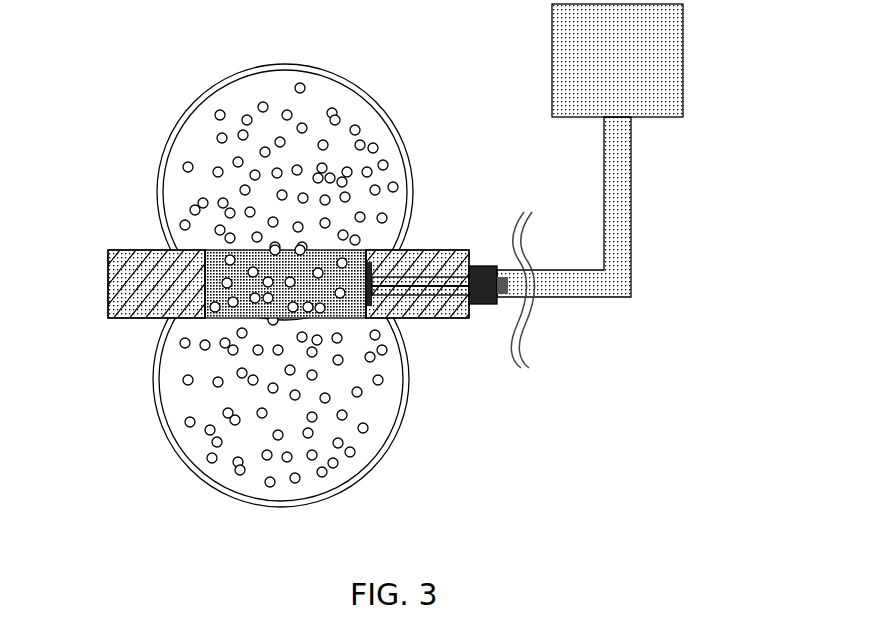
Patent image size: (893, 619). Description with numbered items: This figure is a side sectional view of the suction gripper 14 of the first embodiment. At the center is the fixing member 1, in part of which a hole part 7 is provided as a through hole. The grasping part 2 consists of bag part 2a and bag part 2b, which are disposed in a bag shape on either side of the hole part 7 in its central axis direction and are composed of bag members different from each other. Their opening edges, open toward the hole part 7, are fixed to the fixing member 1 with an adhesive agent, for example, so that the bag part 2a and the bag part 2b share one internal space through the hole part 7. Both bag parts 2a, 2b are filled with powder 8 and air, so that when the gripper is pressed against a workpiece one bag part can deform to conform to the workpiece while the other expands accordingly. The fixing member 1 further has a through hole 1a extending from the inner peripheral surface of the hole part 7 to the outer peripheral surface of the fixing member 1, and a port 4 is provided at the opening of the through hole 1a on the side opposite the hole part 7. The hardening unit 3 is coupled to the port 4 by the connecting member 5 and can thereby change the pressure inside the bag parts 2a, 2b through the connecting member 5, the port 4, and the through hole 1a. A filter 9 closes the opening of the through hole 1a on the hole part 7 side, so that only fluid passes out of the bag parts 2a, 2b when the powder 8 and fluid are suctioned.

The suction gripper 14 is at (108, 82).
The grasping part 2 is at (114, 377).
The bag part 2a is at (412, 157).
The bag part 2b is at (403, 407).
The filter 9 is at (360, 240).
The powder 8 is at (358, 450).
The hole part 7 is at (303, 288).
The fixing member 1 is at (450, 320).
The through hole 1a is at (442, 275).
The port 4 is at (477, 266).
The connecting member 5 is at (631, 218).
The hardening unit 3 is at (683, 90).